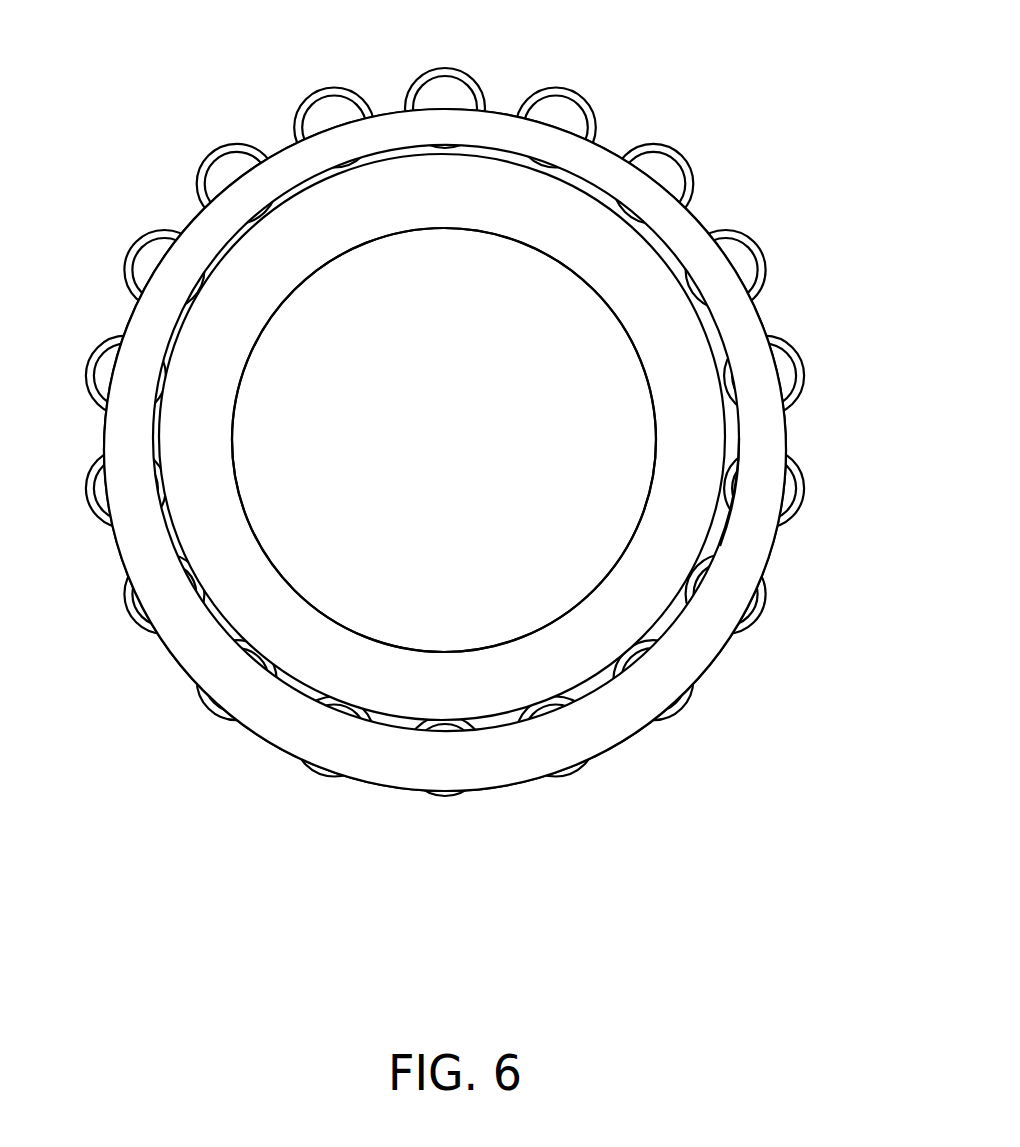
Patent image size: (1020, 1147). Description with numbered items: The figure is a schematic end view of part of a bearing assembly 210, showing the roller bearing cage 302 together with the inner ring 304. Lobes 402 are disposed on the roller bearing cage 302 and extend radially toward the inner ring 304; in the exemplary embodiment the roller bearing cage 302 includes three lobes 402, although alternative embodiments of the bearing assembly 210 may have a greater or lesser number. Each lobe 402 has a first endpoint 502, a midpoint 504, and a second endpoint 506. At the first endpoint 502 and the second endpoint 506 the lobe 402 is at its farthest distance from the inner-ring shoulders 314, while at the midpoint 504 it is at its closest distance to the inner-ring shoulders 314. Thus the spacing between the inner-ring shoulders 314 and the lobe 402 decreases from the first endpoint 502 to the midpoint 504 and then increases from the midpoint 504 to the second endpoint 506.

The bearing assembly 210 is at (188, 86).
The roller bearing cage 302 is at (612, 150).
The inner ring 304 is at (233, 535).
The inner-ring shoulders 314 is at (172, 520).
The lobes 402 is at (210, 278).
The first endpoint 502 is at (436, 144).
The midpoint 504 is at (697, 314).
The second endpoint 506 is at (737, 635).